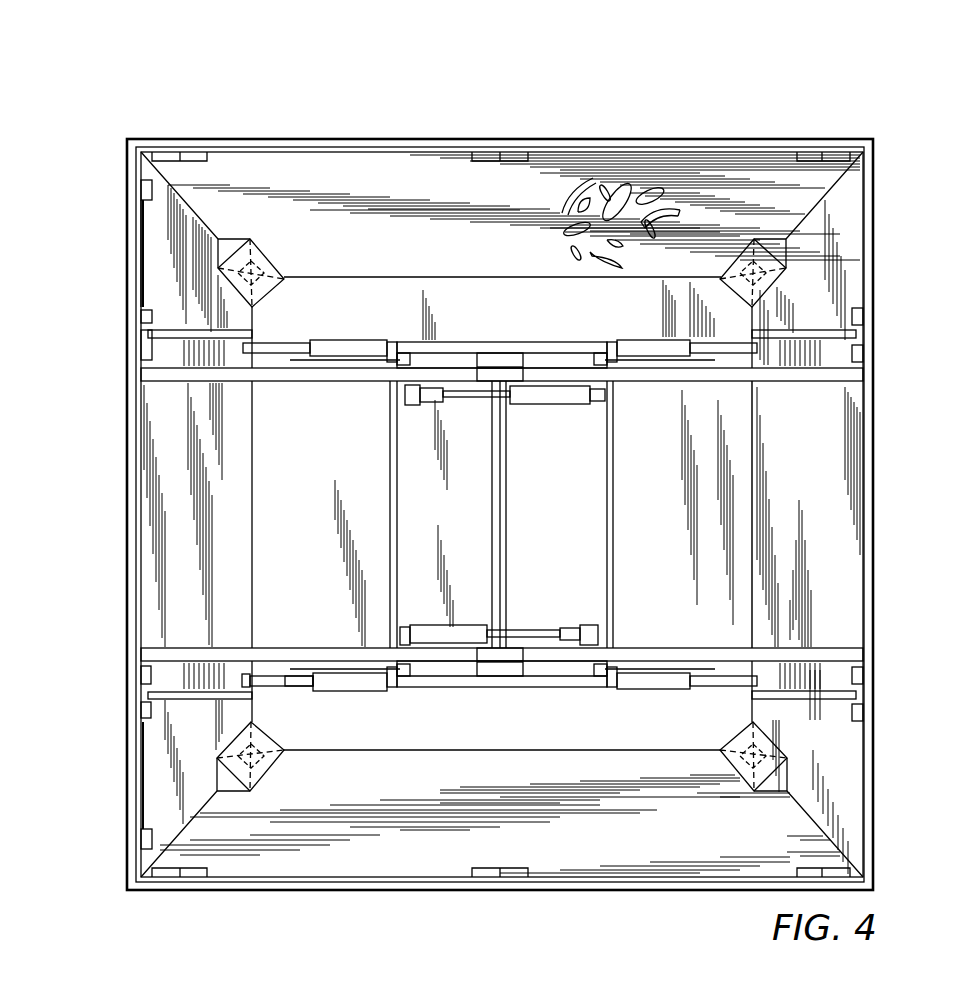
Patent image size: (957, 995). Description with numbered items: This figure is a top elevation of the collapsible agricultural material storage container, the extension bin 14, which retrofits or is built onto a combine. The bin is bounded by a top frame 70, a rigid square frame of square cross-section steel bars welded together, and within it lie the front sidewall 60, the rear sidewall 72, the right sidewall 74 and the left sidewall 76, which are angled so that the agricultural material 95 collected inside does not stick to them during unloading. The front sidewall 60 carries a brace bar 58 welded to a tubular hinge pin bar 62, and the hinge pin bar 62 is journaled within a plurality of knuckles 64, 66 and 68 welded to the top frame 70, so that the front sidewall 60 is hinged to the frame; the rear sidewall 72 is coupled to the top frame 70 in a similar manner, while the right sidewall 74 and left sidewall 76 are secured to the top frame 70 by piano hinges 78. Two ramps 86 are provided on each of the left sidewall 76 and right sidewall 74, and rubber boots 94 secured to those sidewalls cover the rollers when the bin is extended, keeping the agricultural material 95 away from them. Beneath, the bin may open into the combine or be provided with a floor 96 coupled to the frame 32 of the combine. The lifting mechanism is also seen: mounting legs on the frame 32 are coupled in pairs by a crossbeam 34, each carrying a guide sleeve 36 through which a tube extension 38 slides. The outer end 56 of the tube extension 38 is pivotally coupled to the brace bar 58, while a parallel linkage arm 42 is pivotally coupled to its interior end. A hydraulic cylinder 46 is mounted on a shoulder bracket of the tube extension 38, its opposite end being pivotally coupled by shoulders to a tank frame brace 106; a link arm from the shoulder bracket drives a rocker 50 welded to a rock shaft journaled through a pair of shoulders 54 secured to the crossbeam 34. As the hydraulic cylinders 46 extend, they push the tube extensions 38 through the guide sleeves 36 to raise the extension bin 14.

The extension bin 14 is at (292, 88).
The top frame 70 is at (275, 145).
The ramp 86 is at (250, 238).
The piano hinges 78 is at (168, 152).
The right sidewall 74 is at (653, 160).
The agricultural material 95 is at (662, 188).
The rubber boots 94 is at (767, 243).
The front sidewall 60 is at (170, 447).
The frame 32 is at (388, 477).
The rear sidewall 72 is at (828, 495).
The floor 96 is at (735, 507).
The tank frame braces 106 is at (655, 655).
The rocker 50 is at (470, 640).
The shoulders 54 is at (503, 647).
The hydraulic cylinder 46 is at (528, 628).
The parallel linkage arm 42 is at (352, 673).
The guide sleeve 36 is at (325, 678).
The tube extension 38 is at (287, 686).
The outer end 56 is at (246, 674).
The knuckle 64 is at (145, 678).
The brace bar 58 is at (193, 695).
The knuckle 66 is at (143, 716).
The hinge pin bar 62 is at (144, 777).
The knuckle 68 is at (144, 836).
The left sidewall 76 is at (563, 845).
The crossbeam 34 is at (433, 690).